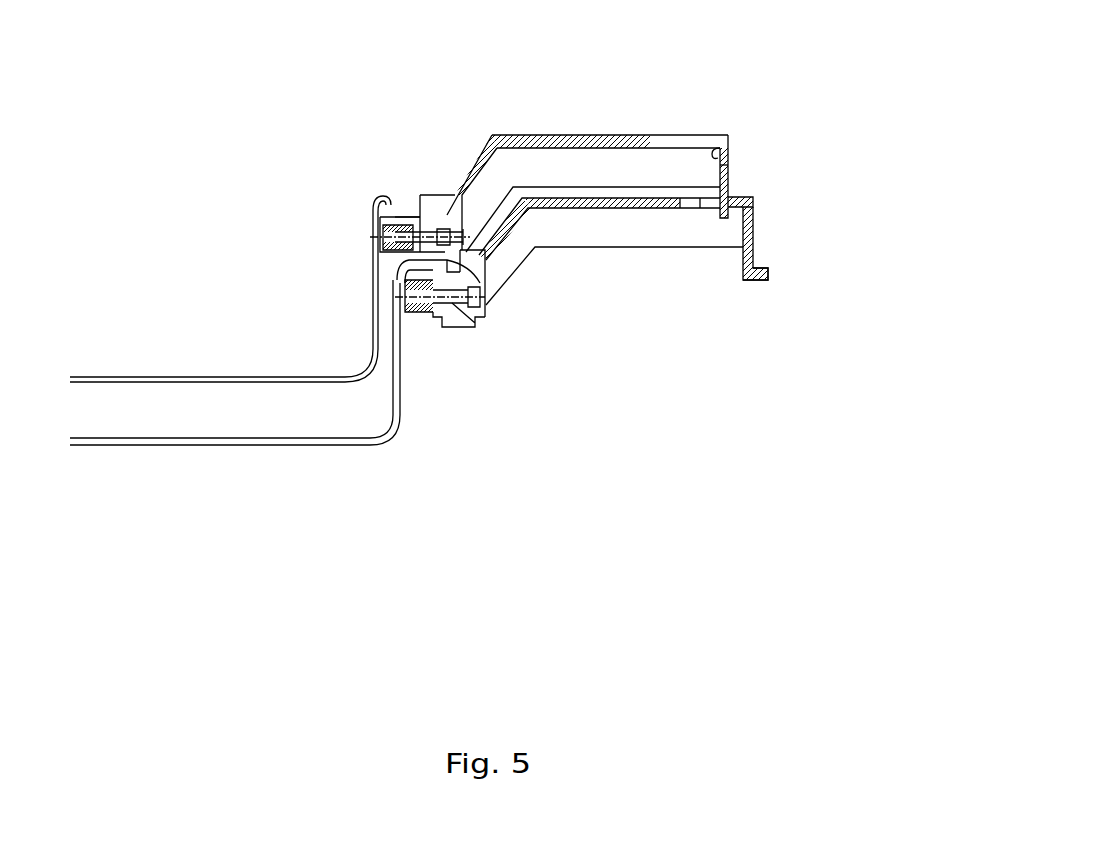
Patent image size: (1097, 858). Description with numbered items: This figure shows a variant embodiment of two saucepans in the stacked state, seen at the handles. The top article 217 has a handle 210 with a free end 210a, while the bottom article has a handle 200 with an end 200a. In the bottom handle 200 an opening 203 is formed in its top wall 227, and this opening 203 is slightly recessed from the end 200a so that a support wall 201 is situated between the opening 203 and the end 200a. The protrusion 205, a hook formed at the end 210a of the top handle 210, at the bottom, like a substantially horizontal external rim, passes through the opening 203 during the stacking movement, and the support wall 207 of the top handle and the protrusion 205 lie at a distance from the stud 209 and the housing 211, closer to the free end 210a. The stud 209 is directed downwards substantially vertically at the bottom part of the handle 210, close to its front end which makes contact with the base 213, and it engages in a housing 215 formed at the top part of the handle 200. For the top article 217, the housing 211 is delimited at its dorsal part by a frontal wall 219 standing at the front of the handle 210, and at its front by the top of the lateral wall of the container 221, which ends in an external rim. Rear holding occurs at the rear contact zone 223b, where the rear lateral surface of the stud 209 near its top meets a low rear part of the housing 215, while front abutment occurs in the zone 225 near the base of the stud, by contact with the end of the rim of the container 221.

The handle 200 is at (580, 250).
The end of the handle 200a is at (755, 232).
The support wall 201 is at (745, 198).
The opening 203 is at (693, 210).
The protrusion 205 is at (742, 275).
The support wall 207 is at (713, 142).
The stud 209 is at (408, 270).
The handle 210 is at (561, 133).
The free end of the handle 210a is at (730, 162).
The housing 211 is at (403, 205).
The base 213 is at (375, 208).
The housing 215 is at (420, 320).
The top article 217 is at (108, 373).
The frontal wall 219 is at (423, 195).
The container 221 is at (368, 357).
The rear contact zone 223b is at (490, 300).
The front abutment zone 225 is at (376, 240).
The top wall 227 is at (640, 190).